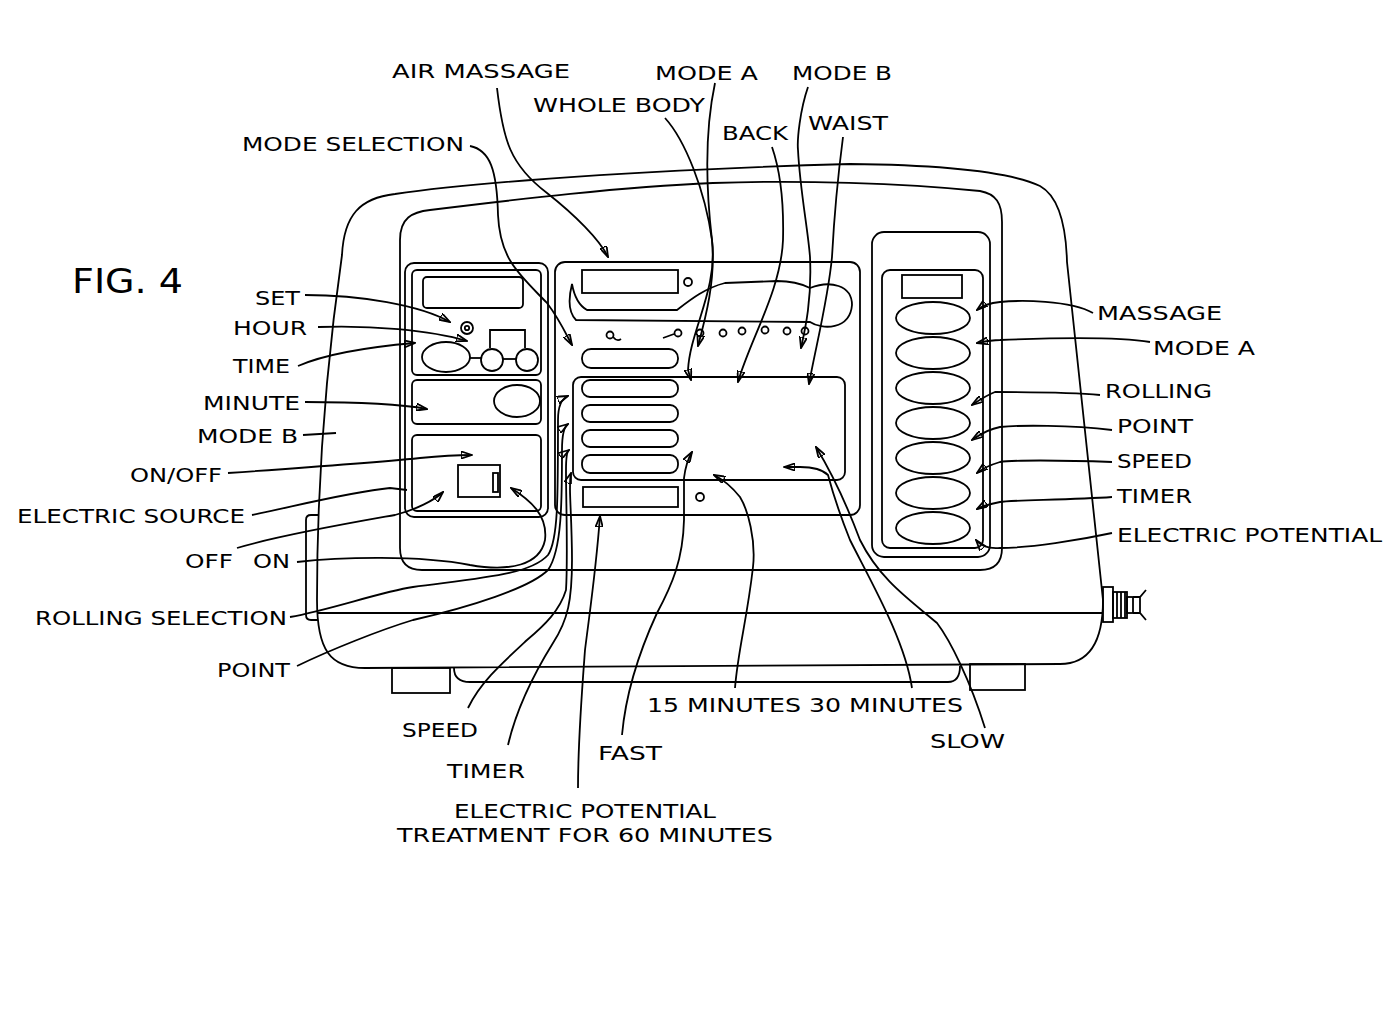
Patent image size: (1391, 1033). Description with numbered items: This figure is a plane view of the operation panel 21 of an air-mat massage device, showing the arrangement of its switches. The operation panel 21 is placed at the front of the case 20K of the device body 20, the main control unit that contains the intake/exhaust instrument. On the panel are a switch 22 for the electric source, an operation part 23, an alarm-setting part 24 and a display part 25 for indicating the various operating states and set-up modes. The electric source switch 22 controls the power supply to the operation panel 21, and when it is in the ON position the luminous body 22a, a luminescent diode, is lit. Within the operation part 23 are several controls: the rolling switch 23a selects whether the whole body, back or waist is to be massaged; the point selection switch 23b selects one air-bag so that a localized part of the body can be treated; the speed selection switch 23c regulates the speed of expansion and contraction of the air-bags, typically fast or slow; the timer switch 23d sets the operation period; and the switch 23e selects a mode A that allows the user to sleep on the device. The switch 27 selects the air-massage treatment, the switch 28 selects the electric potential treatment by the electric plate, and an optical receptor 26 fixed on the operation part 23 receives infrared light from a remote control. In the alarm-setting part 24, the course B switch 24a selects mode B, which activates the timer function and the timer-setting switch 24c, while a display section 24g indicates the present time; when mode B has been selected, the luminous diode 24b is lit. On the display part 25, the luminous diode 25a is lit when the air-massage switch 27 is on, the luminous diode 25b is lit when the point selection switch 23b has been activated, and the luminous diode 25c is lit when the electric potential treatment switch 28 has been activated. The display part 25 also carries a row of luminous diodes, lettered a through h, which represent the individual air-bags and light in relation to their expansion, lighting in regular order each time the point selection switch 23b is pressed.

The device body 20 is at (1055, 198).
The case 20K is at (558, 186).
The operation panel 21 is at (866, 215).
The switch for electric source 22 is at (470, 498).
The luminous body 22a is at (494, 498).
The operation part 23 is at (994, 373).
The rolling switch 23a is at (976, 389).
The point selection switch 23b is at (976, 424).
The speed selection switch 23c is at (976, 459).
The timer switch 23d is at (976, 494).
The mode A switch 23e is at (976, 353).
The alarm-setting part 24 is at (519, 256).
The course B switch 24a is at (511, 426).
The luminous diode 24b is at (410, 402).
The timer-setting switch 24c is at (405, 372).
The display section 24g is at (474, 277).
The display part 25 is at (734, 252).
The luminous diode 25a is at (688, 277).
The luminous diode 25b is at (708, 417).
The luminous diode 25c is at (700, 501).
The optical receptor 26 is at (965, 285).
The air-massage switch 27 is at (976, 318).
The electric potential treatment switch 28 is at (978, 528).